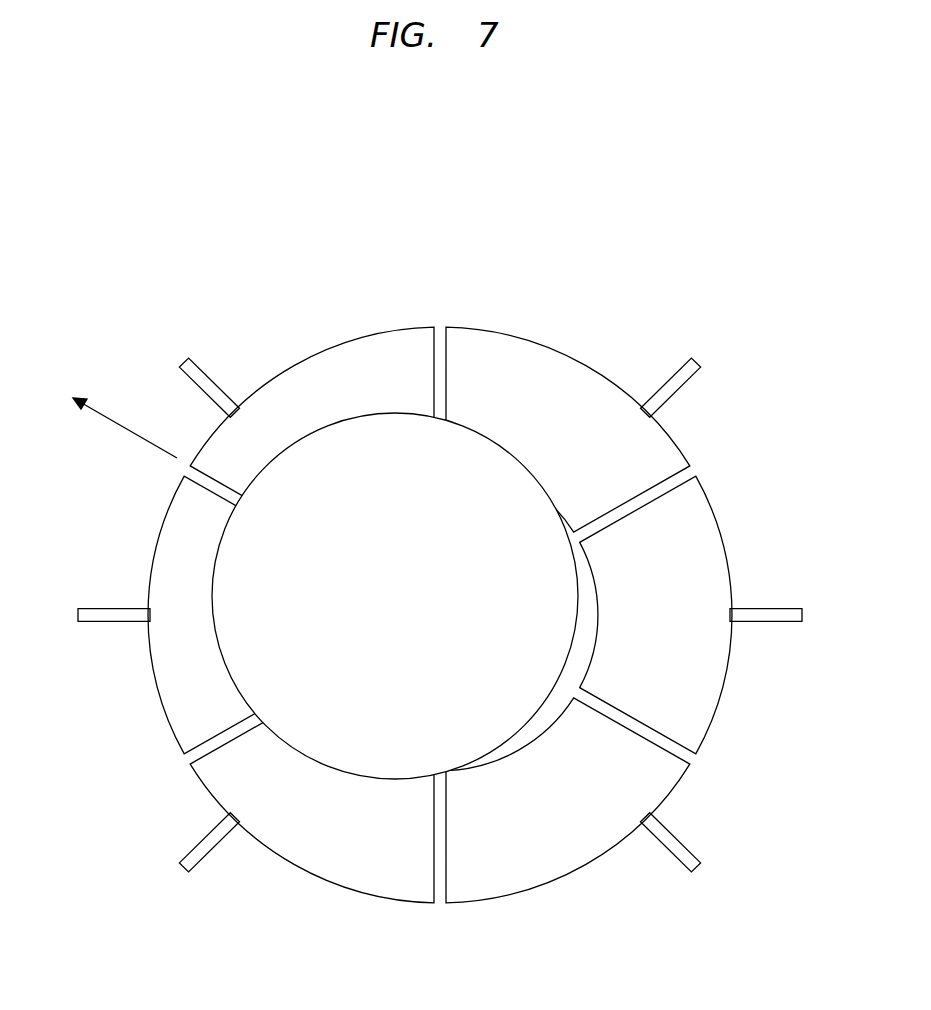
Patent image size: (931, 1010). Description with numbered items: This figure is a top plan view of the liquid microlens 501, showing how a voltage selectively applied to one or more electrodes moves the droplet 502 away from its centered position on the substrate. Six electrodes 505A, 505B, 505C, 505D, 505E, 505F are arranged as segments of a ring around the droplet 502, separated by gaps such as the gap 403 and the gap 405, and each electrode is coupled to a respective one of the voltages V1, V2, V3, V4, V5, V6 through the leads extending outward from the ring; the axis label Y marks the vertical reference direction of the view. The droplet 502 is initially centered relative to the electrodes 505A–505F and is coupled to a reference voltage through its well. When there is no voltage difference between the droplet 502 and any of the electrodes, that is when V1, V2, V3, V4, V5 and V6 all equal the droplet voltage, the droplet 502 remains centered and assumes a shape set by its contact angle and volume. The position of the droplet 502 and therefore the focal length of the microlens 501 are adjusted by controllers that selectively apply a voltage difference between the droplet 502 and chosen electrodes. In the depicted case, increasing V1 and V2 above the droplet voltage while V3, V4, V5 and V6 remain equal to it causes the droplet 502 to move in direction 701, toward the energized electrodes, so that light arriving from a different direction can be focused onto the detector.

The microlens 501 is at (113, 192).
The droplet 502 is at (518, 469).
The electrode 505A is at (224, 615).
The electrode 505B is at (656, 615).
The electrode 505C is at (312, 429).
The electrode 505D is at (568, 800).
The electrode 505E is at (568, 429).
The electrode 505F is at (312, 800).
The gap between segments 403 is at (743, 456).
The gap between segments 405 is at (179, 748).
The direction 701 is at (127, 437).
The voltage V1 is at (114, 615).
The voltage V2 is at (209, 387).
The voltage V3 is at (671, 387).
The voltage V4 is at (766, 615).
The voltage V5 is at (671, 842).
The voltage V6 is at (209, 842).
The Y axis Y is at (441, 234).